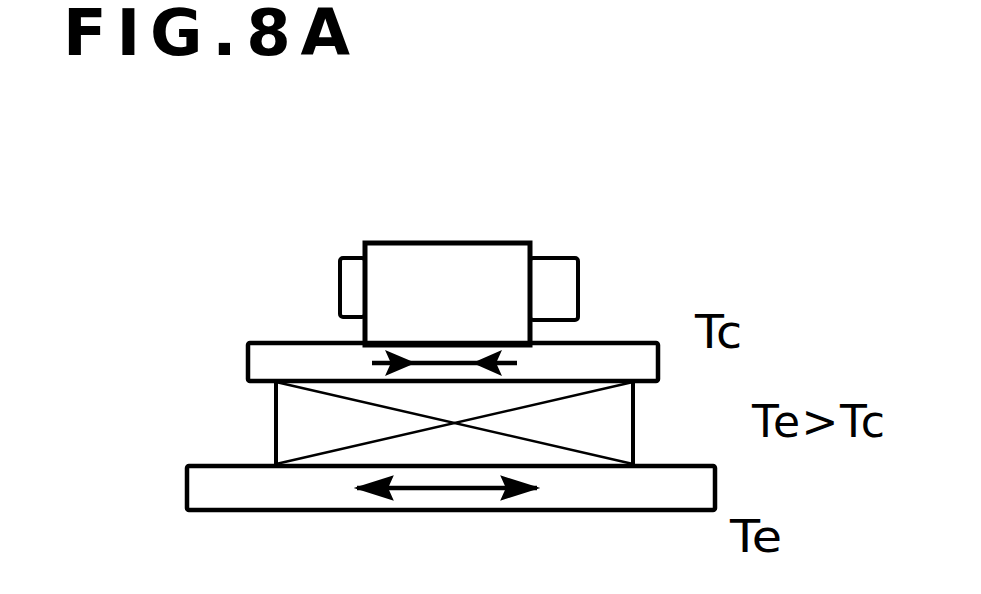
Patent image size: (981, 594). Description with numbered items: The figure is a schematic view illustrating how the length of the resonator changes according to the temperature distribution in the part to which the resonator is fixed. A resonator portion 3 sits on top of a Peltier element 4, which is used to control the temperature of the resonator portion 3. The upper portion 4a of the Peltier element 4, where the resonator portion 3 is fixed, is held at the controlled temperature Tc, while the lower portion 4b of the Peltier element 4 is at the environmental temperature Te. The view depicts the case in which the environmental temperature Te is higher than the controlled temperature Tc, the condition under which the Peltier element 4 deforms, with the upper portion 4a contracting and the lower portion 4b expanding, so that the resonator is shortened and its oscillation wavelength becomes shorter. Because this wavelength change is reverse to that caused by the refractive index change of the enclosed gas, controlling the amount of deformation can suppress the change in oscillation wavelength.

The resonator portion 3 is at (413, 252).
The Peltier element 4 is at (244, 409).
The upper portion 4a is at (275, 352).
The lower portion 4b is at (228, 487).